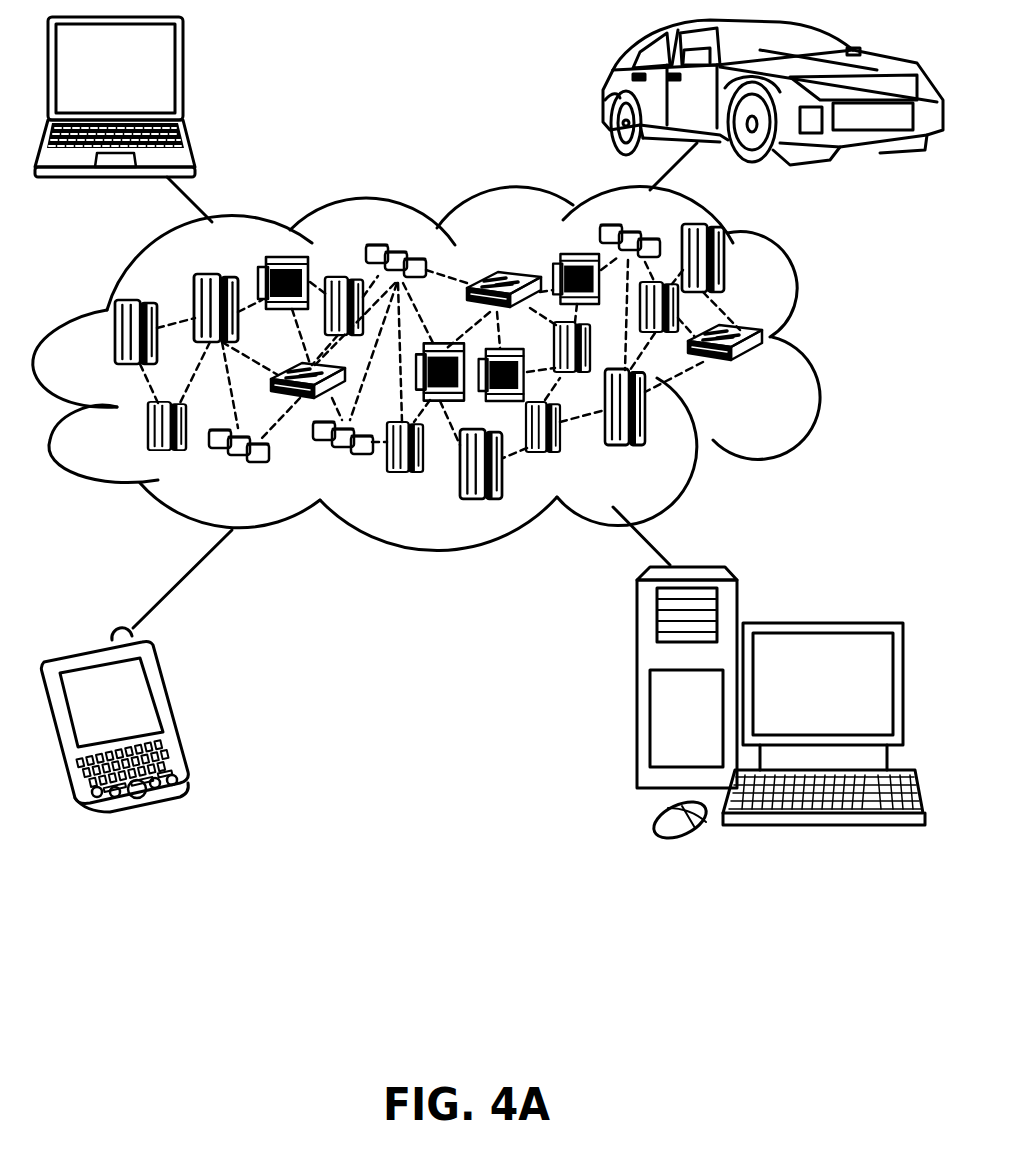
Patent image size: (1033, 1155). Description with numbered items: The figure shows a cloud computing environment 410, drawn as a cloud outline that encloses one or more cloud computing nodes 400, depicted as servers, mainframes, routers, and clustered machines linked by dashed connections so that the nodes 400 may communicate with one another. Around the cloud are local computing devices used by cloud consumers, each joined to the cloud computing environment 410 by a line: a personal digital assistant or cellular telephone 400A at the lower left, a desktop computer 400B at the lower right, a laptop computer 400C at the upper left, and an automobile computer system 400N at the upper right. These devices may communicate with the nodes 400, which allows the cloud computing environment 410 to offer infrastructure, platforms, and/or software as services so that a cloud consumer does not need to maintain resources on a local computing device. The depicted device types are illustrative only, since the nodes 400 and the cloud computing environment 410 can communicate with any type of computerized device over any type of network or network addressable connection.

The cloud computing nodes 400 is at (774, 375).
The cloud computing environment 410 is at (829, 337).
The personal digital assistant (PDA) or cellular telephone 400A is at (172, 712).
The desktop computer 400B is at (819, 622).
The laptop computer 400C is at (183, 76).
The automobile computer system 400N is at (604, 88).